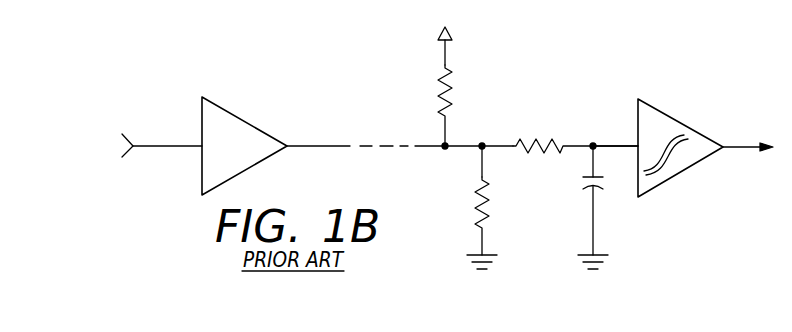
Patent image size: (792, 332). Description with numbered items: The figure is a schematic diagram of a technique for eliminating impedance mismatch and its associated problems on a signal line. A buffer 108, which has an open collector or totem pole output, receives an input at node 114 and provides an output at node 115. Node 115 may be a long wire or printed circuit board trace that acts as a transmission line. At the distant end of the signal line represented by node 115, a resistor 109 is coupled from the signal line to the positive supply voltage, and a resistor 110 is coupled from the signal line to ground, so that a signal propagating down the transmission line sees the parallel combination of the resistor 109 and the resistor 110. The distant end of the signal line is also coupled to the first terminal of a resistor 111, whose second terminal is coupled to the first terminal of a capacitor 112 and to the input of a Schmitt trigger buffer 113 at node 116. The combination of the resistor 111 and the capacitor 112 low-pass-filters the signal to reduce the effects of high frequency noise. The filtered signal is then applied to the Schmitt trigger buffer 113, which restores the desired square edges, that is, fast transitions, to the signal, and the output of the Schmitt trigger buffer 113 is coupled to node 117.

The buffer 108 is at (241, 119).
The resistor 109 is at (450, 88).
The resistor 110 is at (478, 202).
The resistor 111 is at (535, 141).
The capacitor 112 is at (590, 184).
The Schmitt trigger buffer 113 is at (685, 168).
The node 114 is at (170, 146).
The node 115 is at (315, 146).
The node 116 is at (623, 146).
The node 117 is at (740, 147).